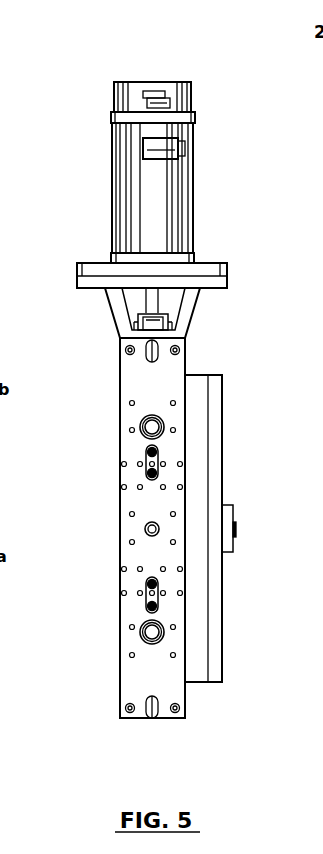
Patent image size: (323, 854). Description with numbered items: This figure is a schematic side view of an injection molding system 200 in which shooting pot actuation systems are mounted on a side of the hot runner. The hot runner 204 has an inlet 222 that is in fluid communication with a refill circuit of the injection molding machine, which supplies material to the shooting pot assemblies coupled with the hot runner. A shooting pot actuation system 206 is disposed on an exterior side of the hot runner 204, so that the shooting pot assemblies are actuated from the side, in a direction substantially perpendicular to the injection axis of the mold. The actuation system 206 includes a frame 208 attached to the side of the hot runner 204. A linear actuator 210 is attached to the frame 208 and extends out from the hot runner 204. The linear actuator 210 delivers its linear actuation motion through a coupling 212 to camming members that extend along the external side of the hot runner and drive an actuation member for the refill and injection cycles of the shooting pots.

The injection molding system 200 is at (78, 98).
The hot runner 204 is at (223, 604).
The shooting pot actuation system 206 is at (188, 722).
The frame 208 is at (156, 408).
The linear actuator 210 is at (193, 216).
The coupling 212 is at (155, 309).
The inlet 222 is at (236, 532).